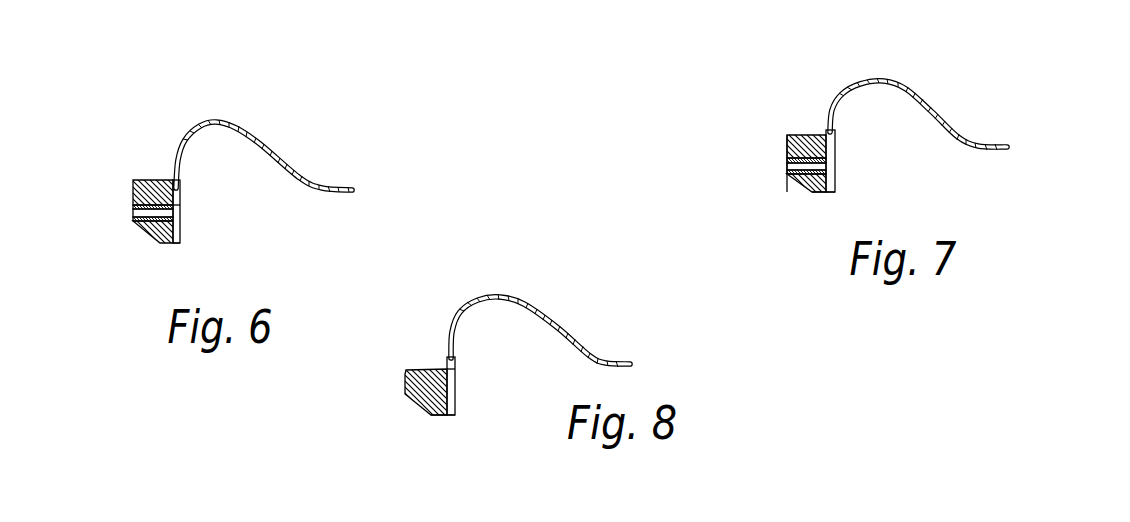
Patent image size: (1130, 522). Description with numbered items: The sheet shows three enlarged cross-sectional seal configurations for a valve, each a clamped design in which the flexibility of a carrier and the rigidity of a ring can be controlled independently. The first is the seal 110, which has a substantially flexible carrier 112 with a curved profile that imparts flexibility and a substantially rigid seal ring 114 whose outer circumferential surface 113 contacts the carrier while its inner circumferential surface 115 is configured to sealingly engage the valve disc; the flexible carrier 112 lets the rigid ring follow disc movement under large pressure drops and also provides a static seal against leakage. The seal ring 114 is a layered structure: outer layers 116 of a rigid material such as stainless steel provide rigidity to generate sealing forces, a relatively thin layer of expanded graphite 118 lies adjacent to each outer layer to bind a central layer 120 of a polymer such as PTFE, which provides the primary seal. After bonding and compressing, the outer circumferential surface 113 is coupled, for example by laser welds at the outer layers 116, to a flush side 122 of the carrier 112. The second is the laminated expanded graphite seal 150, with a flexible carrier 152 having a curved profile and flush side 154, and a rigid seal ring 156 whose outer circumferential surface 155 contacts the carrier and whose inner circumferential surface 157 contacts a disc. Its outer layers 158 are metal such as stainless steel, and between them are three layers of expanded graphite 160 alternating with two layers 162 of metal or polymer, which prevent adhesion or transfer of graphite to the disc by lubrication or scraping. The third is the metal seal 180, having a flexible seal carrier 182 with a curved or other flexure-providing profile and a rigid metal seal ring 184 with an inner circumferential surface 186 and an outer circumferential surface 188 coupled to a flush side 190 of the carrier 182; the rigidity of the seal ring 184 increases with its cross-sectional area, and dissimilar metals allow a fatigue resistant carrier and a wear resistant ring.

In FIG. 6, the seal 110 is at (201, 181).
In FIG. 6, the flexible carrier 112 is at (267, 150).
In FIG. 6, the outer circumferential surface 113 is at (163, 242).
In FIG. 6, the seal ring 114 is at (115, 200).
In FIG. 6, the inner circumferential surface 115 is at (135, 232).
In FIG. 6, the outer layers 116 is at (135, 188).
In FIG. 6, the expanded graphite layers 118 is at (132, 207).
In FIG. 6, the central layer 120 is at (132, 213).
In FIG. 6, the flush side 122 is at (180, 210).
In FIG. 7, the laminated expanded graphite seal 150 is at (850, 144).
In FIG. 7, the flexible carrier 152 is at (965, 119).
In FIG. 7, the flush side 154 is at (804, 158).
In FIG. 7, the outer circumferential surface 155 is at (818, 193).
In FIG. 7, the seal ring 156 is at (810, 130).
In FIG. 7, the inner circumferential surface 157 is at (788, 141).
In FIG. 7, the outer layers 158 is at (787, 147).
In FIG. 7, the expanded graphite layers 160 is at (787, 159).
In FIG. 7, the metal or polymer layers 162 is at (787, 167).
In FIG. 8, the metal seal 180 is at (485, 348).
In FIG. 8, the flexible seal carrier 182 is at (545, 329).
In FIG. 8, the seal ring 184 is at (418, 378).
In FIG. 8, the inner circumferential surface 186 is at (424, 409).
In FIG. 8, the outer circumferential surface 188 is at (440, 418).
In FIG. 8, the flush side 190 is at (451, 383).